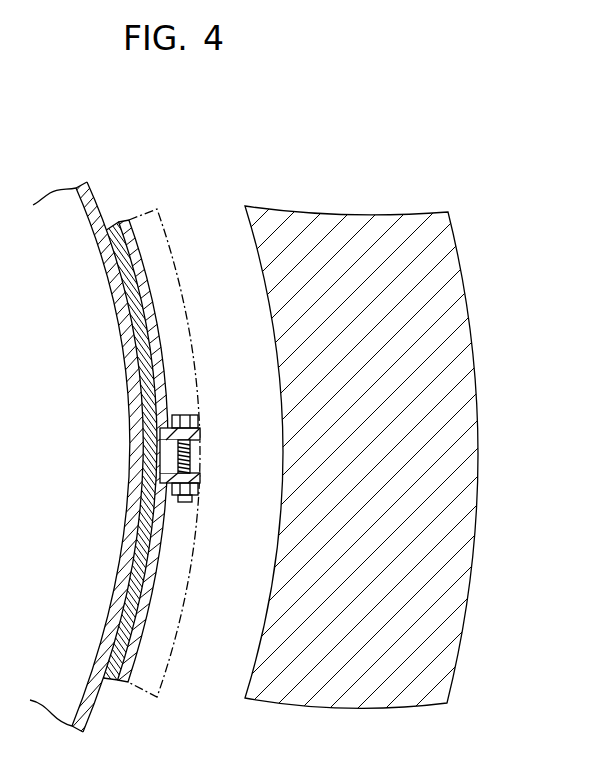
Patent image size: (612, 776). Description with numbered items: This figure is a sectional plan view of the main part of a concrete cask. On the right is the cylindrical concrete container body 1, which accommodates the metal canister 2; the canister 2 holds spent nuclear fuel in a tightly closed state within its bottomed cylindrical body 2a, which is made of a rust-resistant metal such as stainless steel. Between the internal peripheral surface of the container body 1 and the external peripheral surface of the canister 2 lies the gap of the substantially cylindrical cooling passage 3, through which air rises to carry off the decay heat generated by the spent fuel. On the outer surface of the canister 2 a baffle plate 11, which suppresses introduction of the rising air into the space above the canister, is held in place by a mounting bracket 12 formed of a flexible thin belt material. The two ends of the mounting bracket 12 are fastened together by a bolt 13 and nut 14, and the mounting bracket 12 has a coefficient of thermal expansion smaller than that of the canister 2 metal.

The container body 1 is at (458, 393).
The canister 2 is at (308, 426).
The body 2a is at (122, 318).
The cooling passage 3 is at (219, 255).
The baffle plate 11 is at (147, 537).
The mounting bracket 12 is at (163, 367).
The bolt 13 is at (190, 452).
The nut 14 is at (192, 488).